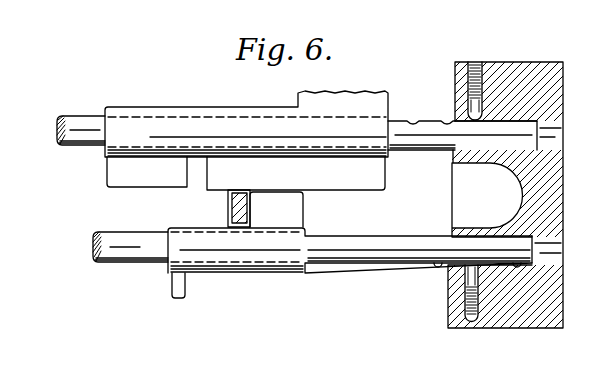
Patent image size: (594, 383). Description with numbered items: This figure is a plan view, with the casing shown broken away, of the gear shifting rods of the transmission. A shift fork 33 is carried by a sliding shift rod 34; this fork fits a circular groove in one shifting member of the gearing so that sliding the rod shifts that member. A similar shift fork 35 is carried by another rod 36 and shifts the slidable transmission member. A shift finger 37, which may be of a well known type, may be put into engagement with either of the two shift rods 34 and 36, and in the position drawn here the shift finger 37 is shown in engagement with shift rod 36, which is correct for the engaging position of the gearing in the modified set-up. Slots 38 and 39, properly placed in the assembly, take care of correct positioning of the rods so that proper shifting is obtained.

The shift fork 33 is at (369, 100).
The sliding shift rod 34 is at (400, 122).
The shift fork 35 is at (173, 283).
The shift rod 36 is at (403, 243).
The shift finger 37 is at (249, 211).
The slot 38 is at (188, 172).
The slot 39 is at (252, 192).